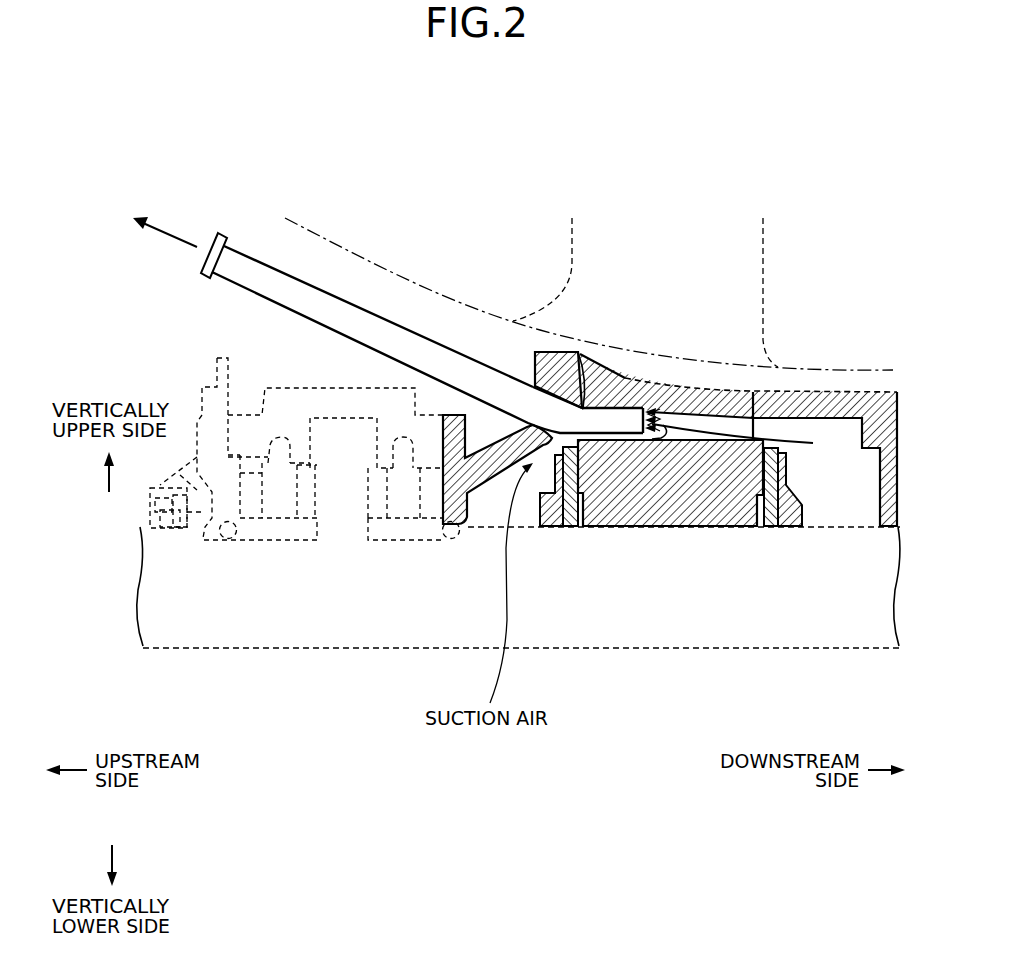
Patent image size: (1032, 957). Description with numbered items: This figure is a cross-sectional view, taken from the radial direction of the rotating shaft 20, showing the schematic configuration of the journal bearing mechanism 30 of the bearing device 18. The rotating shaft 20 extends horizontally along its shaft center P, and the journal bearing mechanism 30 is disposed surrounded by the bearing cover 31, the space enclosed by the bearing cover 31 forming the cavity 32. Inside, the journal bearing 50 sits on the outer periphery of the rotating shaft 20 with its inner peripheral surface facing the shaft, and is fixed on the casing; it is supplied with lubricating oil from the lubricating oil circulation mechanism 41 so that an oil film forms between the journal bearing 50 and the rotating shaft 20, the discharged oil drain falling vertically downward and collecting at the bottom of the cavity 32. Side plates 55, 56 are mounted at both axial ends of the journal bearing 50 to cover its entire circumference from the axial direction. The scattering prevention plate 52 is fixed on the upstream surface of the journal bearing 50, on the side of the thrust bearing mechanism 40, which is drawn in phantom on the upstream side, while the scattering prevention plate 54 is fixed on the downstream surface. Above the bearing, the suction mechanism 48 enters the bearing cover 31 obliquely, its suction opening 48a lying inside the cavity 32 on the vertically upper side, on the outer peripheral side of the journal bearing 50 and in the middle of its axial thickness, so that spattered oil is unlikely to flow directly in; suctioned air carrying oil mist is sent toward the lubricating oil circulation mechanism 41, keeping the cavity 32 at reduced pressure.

The bearing device 18 is at (552, 180).
The rotating shaft 20 is at (862, 625).
The journal bearing mechanism 30 is at (626, 485).
The bearing cover 31 is at (877, 393).
The cavity 32 is at (853, 473).
The thrust bearing mechanism 40 is at (300, 393).
The lubricating oil circulation mechanism 41 is at (151, 223).
The suction mechanism 48 is at (246, 268).
The suction opening 48a is at (650, 406).
The journal bearing 50 is at (697, 453).
The scattering prevention plate 52 is at (530, 527).
The scattering prevention plate 54 is at (805, 512).
The side plate 55 is at (572, 528).
The side plate 56 is at (780, 527).
The shaft center P is at (823, 648).